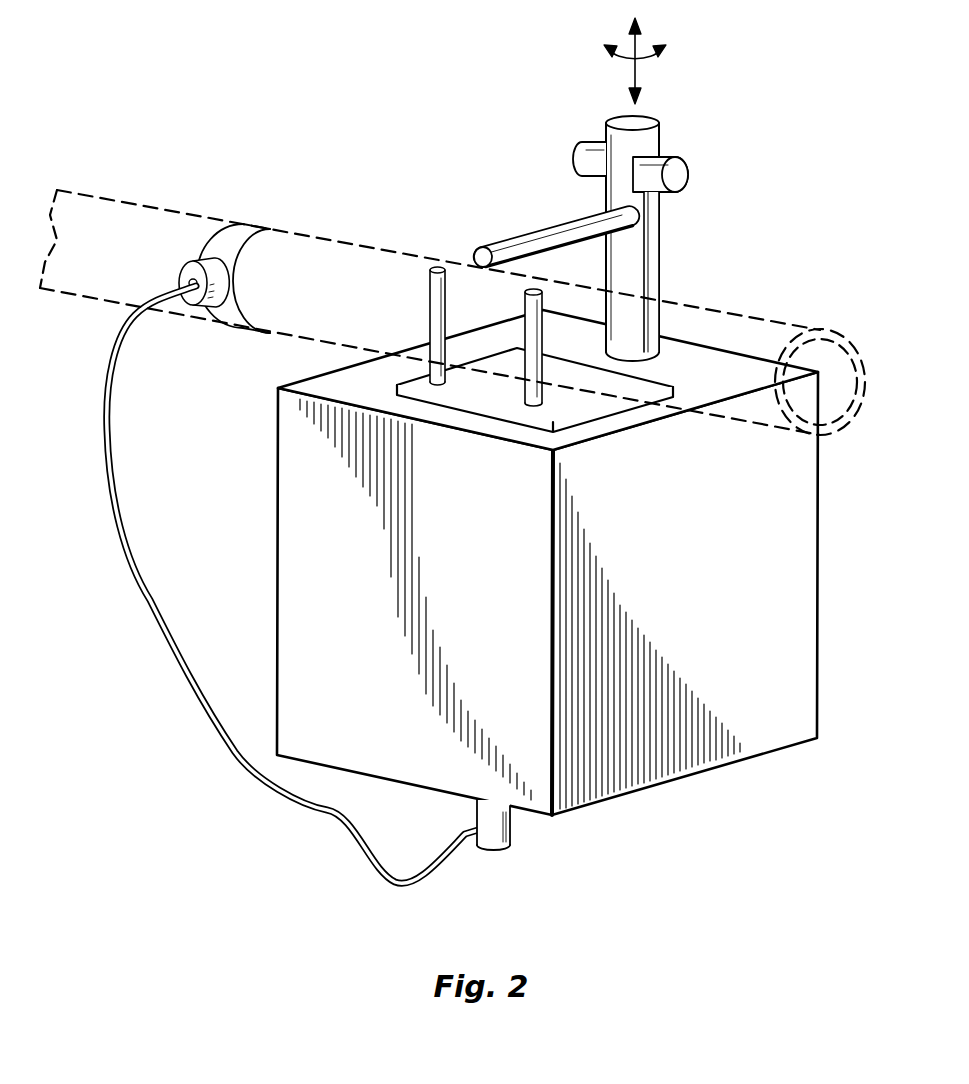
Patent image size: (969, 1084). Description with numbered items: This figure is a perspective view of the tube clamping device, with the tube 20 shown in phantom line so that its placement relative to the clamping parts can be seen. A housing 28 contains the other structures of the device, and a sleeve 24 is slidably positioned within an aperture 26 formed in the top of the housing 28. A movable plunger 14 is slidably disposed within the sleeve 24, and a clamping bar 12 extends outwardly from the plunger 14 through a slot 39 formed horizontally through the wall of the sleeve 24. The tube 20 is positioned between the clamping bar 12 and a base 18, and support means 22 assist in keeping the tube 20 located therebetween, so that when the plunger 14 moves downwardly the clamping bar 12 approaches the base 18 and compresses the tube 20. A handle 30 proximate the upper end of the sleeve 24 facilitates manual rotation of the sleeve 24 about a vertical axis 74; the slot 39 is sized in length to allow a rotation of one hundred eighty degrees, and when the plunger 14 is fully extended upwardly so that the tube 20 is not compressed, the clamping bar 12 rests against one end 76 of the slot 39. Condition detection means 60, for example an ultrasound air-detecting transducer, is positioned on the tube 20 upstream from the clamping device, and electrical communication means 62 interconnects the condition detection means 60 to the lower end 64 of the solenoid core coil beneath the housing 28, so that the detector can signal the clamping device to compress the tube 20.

The clamping bar 12 is at (529, 224).
The movable plunger 14 is at (610, 193).
The base 18 is at (573, 403).
The tube 20 is at (765, 340).
The support means 22 is at (438, 372).
The sleeve 24 is at (640, 117).
The aperture 26 is at (660, 351).
The housing 28 is at (781, 602).
The handle 30 is at (682, 172).
The slot 39 is at (607, 211).
The condition detection means 60 is at (232, 240).
The electrical communication means 62 is at (112, 420).
The lower end of the coil 64 is at (495, 835).
The vertical axis 74 is at (642, 38).
The end of the slot 76 is at (646, 218).